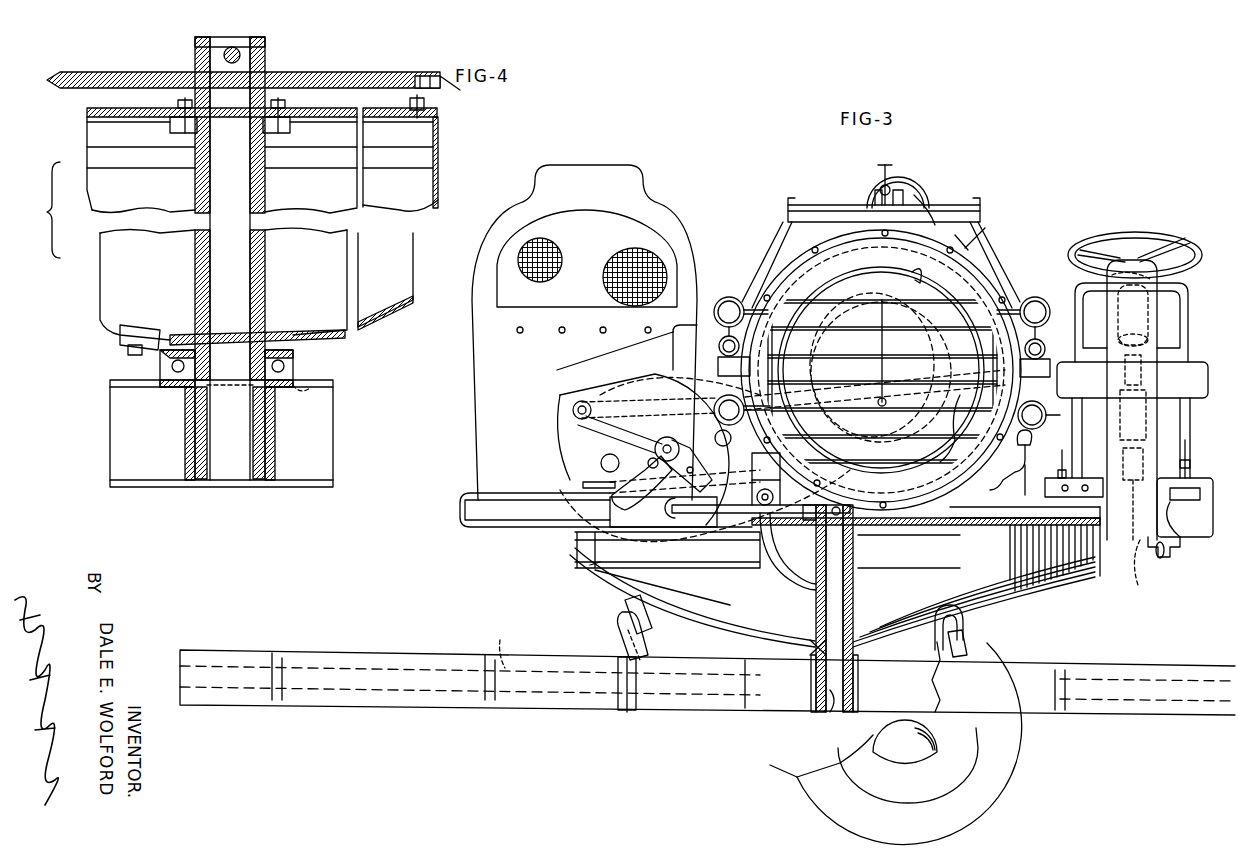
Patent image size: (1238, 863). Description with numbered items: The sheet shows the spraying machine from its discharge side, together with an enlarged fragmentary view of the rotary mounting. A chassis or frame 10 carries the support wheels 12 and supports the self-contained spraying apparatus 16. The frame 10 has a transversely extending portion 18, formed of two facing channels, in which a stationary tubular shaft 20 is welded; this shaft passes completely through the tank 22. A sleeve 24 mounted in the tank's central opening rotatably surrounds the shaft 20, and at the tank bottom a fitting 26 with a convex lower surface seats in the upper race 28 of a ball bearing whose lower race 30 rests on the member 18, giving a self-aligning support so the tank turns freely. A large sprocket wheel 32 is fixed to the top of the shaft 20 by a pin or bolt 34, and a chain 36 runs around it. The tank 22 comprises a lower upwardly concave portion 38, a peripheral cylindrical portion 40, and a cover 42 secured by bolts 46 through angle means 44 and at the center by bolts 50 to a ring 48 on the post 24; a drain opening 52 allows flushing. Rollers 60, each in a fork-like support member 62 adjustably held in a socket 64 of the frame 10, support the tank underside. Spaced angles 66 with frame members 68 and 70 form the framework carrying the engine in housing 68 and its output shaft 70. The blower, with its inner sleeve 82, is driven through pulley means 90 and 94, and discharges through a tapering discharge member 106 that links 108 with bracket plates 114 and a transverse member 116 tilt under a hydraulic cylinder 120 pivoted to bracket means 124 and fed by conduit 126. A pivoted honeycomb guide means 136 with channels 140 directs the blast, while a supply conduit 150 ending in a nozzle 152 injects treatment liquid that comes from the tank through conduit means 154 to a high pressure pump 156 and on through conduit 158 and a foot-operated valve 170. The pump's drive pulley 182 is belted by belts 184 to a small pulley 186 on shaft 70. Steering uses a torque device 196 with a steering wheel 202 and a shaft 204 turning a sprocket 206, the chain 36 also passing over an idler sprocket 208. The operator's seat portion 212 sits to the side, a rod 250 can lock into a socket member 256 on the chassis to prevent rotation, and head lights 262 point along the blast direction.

In FIG. 4, the frame 10 is at (333, 410).
In FIG. 3, the frame 10 is at (530, 708).
In FIG. 3, the support wheels 12 is at (1010, 790).
In FIG. 3, the spraying apparatus 16 is at (1043, 217).
In FIG. 4, the transversely extending portion 18 is at (275, 436).
In FIG. 3, the transversely extending portion 18 is at (808, 690).
In FIG. 4, the tubular shaft 20 is at (248, 262).
In FIG. 3, the tubular shaft 20 is at (836, 700).
In FIG. 4, the tank 22 is at (440, 136).
In FIG. 3, the tank 22 is at (1080, 592).
In FIG. 4, the sleeve 24 is at (265, 290).
In FIG. 3, the sleeve 24 is at (853, 600).
In FIG. 4, the fitting 26 is at (268, 330).
In FIG. 3, the fitting 26 is at (815, 620).
In FIG. 4, the upper race 28 is at (293, 352).
In FIG. 4, the lower race 30 is at (300, 388).
In FIG. 4, the sprocket wheel 32 is at (355, 72).
In FIG. 3, the sprocket wheel 32 is at (910, 527).
In FIG. 4, the pin or bolt 34 is at (224, 55).
In FIG. 4, the chain 36 is at (440, 88).
In FIG. 3, the chain 36 is at (1025, 525).
In FIG. 4, the lower upwardly concave portion 38 is at (380, 322).
In FIG. 4, the peripheral cylindrical portion 40 is at (438, 198).
In FIG. 4, the cover 42 is at (87, 110).
In FIG. 3, the cover 42 is at (590, 572).
In FIG. 4, the angle means 44 is at (430, 138).
In FIG. 4, the bolts 46 is at (420, 100).
In FIG. 4, the ring 48 is at (280, 118).
In FIG. 4, the bolts 50 is at (285, 90).
In FIG. 4, the drain opening 52 is at (125, 345).
In FIG. 3, the rollers 60 is at (625, 605).
In FIG. 3, the fork-like support member 62 is at (615, 632).
In FIG. 3, the socket 64 is at (628, 712).
In FIG. 3, the angles 66 is at (540, 532).
In FIG. 3, the housing 68 is at (470, 520).
In FIG. 3, the output shaft 70 is at (578, 368).
In FIG. 3, the cylindrical sleeve 82 is at (828, 428).
In FIG. 3, the pulley means 90 is at (898, 372).
In FIG. 3, the pulley means 94 is at (660, 360).
In FIG. 3, the discharge member 106 is at (960, 275).
In FIG. 3, the links 108 is at (722, 297).
In FIG. 3, the bracket plate 114 is at (775, 235).
In FIG. 3, the transversely extending member 116 is at (820, 190).
In FIG. 3, the cylinder 120 is at (900, 190).
In FIG. 3, the bracket means 124 is at (855, 190).
In FIG. 3, the conduit 126 is at (930, 195).
In FIG. 3, the guide means 136 is at (893, 282).
In FIG. 3, the channels 140 is at (932, 428).
In FIG. 3, the supply conduit 150 is at (858, 372).
In FIG. 3, the nozzle 152 is at (886, 400).
In FIG. 3, the conduit means 154 is at (720, 545).
In FIG. 3, the high pressure pump 156 is at (640, 528).
In FIG. 3, the conduit 158 is at (598, 498).
In FIG. 3, the valve 170 is at (1075, 455).
In FIG. 3, the drive pulley 182 is at (605, 460).
In FIG. 3, the belts 184 is at (585, 448).
In FIG. 3, the pulley 186 is at (572, 412).
In FIG. 3, the torque device 196 is at (1145, 418).
In FIG. 3, the steering wheel 202 is at (1154, 244).
In FIG. 3, the shaft 204 is at (1192, 458).
In FIG. 3, the sprocket 206 is at (1157, 568).
In FIG. 3, the idler sprocket 208 is at (990, 540).
In FIG. 3, the seat portion 212 is at (1201, 334).
In FIG. 3, the rod 250 is at (1162, 558).
In FIG. 3, the socket member 256 is at (494, 641).
In FIG. 3, the head lights 262 is at (738, 298).